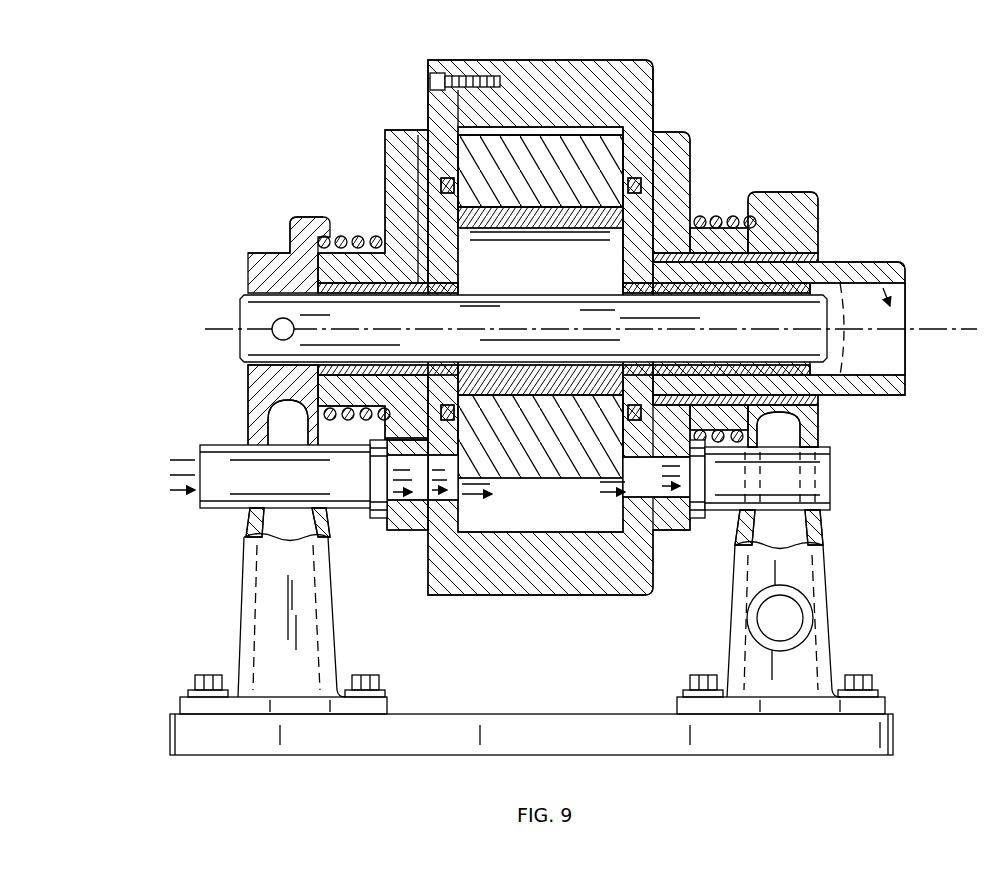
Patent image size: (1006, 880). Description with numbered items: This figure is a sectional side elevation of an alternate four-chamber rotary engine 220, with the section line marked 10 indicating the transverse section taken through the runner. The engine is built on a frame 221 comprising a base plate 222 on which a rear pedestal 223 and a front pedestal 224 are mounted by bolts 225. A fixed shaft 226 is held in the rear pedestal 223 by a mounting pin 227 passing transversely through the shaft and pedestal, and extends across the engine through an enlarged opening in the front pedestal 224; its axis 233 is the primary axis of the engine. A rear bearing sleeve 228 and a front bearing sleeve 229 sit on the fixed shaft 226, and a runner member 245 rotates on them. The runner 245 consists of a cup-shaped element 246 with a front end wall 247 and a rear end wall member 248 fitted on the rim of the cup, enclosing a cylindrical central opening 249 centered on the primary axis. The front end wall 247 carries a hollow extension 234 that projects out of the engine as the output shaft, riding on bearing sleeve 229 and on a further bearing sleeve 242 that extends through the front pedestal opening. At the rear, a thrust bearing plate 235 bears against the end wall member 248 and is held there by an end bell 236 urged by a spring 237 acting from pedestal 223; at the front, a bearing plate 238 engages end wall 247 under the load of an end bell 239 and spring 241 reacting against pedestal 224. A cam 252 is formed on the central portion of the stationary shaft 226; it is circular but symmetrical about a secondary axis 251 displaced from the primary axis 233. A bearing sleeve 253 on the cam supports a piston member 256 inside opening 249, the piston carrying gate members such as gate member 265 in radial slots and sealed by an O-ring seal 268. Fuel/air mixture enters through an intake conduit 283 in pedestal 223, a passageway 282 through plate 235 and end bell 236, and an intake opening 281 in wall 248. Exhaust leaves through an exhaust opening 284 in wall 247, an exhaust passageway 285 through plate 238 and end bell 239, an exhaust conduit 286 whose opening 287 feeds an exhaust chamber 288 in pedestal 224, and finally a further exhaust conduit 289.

The section line 10 is at (490, 15).
The four-chamber rotary engine 220 is at (265, 150).
The frame 221 is at (566, 706).
The base plate 222 is at (498, 735).
The rear pedestal 223 is at (258, 594).
The front pedestal 224 is at (822, 578).
The bolts 225 is at (196, 682).
The fixed shaft 226 is at (252, 345).
The mounting pin 227 is at (293, 326).
The rear bearing sleeve 228 is at (383, 293).
The front bearing sleeve 229 is at (716, 292).
The primary axis 233 is at (212, 328).
The hollow extension (output shaft) 234 is at (833, 270).
The thrust bearing plate 235 is at (428, 140).
The end bell 236 is at (397, 202).
The spring 237 is at (350, 238).
The bearing plate 238 is at (690, 140).
The end bell 239 is at (690, 192).
The spring 241 is at (718, 218).
The bearing sleeve 242 is at (830, 403).
The runner member 245 is at (513, 58).
The cup-shaped element 246 is at (610, 62).
The front end wall 247 is at (647, 118).
The rear end wall member 248 is at (437, 108).
The central opening 249 is at (545, 495).
The secondary axis 251 is at (485, 306).
The cam 252 is at (612, 308).
The bearing sleeve 253 is at (535, 232).
The piston member 256 is at (540, 408).
The gate member 265 is at (645, 560).
The O-ring seal 268 is at (445, 185).
The intake opening 281 is at (456, 492).
The passageway 282 is at (402, 532).
The intake conduit 283 is at (216, 455).
The exhaust opening 284 is at (612, 497).
The exhaust passageway 285 is at (697, 518).
The exhaust conduit 286 is at (824, 460).
The opening 287 is at (786, 505).
The exhaust chamber 288 is at (803, 535).
The exhaust conduit 289 is at (806, 626).